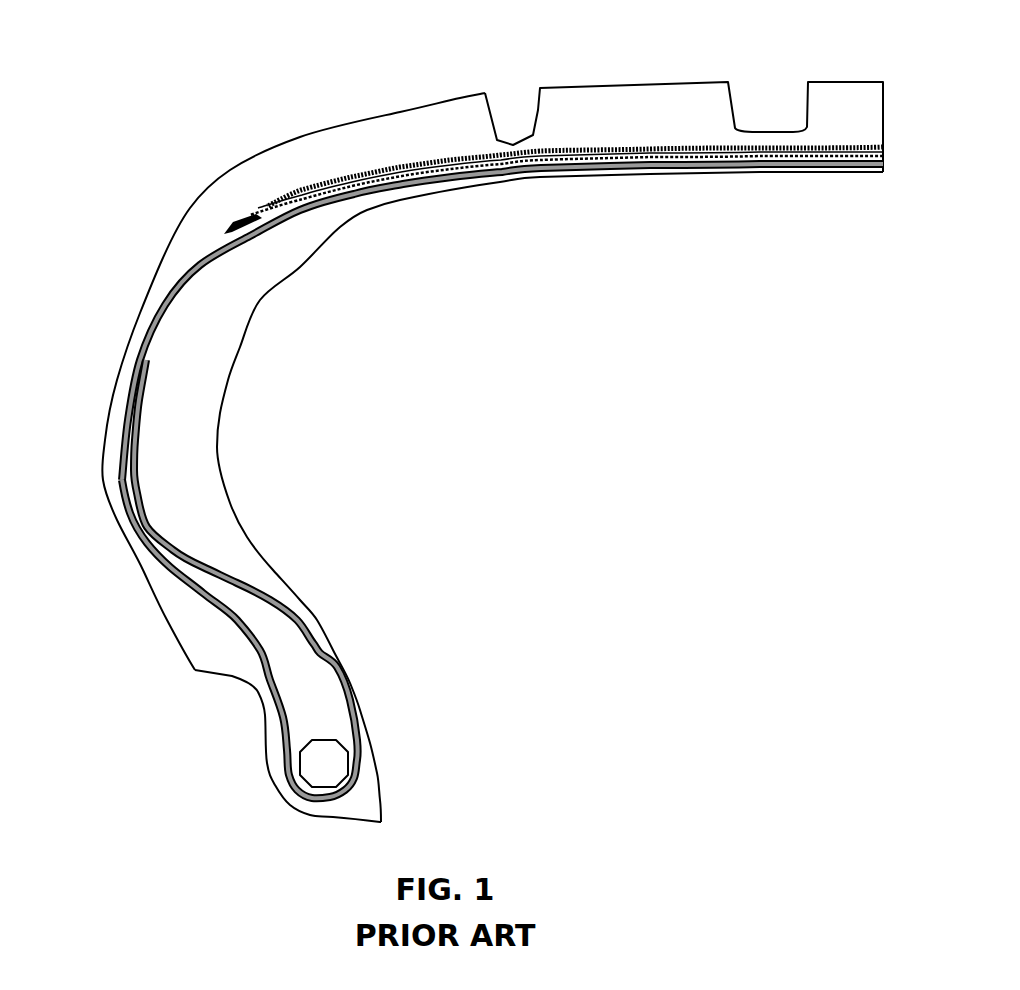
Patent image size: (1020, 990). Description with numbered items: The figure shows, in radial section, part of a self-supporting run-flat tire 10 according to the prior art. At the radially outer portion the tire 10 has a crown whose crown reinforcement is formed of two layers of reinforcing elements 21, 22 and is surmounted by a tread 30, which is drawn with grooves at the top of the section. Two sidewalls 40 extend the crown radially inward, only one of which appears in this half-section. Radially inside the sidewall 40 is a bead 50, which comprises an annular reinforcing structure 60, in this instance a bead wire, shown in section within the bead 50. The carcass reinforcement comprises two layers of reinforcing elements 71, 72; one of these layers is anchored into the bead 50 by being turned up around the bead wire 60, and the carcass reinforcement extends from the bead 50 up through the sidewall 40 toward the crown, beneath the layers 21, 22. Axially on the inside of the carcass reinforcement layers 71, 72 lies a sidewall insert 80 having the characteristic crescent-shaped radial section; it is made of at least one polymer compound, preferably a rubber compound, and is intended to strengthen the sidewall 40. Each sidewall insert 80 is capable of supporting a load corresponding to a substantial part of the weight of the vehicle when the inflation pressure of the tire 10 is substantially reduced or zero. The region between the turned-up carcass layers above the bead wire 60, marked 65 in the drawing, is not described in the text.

The run-flat tire 10 is at (222, 105).
The layer of reinforcing elements 21 is at (343, 180).
The layer of reinforcing elements 22 is at (247, 220).
The tread 30 is at (620, 113).
The sidewall 40 is at (117, 373).
The bead 50 is at (370, 782).
The annular reinforcing structure 60 is at (317, 770).
The apex 65 is at (320, 687).
The layer of reinforcing elements 71 is at (310, 633).
The layer of reinforcing elements 72 is at (122, 413).
The sidewall insert 80 is at (193, 400).